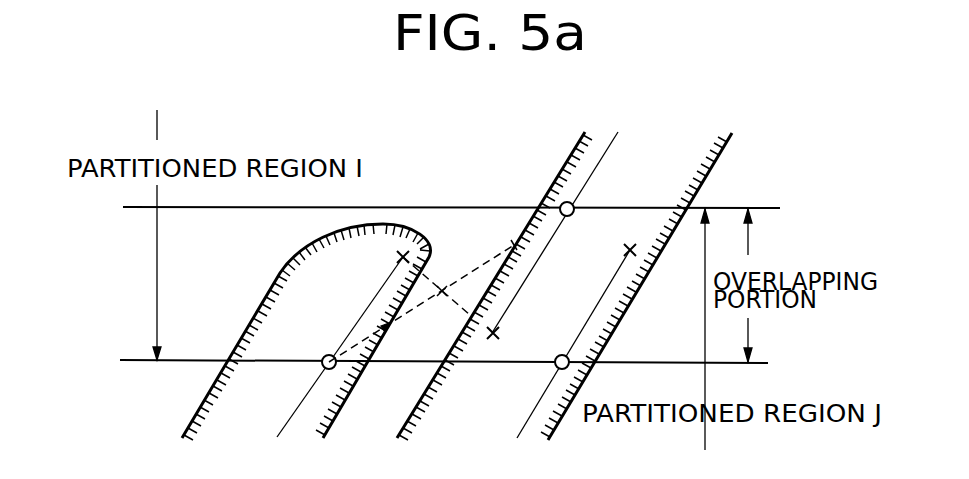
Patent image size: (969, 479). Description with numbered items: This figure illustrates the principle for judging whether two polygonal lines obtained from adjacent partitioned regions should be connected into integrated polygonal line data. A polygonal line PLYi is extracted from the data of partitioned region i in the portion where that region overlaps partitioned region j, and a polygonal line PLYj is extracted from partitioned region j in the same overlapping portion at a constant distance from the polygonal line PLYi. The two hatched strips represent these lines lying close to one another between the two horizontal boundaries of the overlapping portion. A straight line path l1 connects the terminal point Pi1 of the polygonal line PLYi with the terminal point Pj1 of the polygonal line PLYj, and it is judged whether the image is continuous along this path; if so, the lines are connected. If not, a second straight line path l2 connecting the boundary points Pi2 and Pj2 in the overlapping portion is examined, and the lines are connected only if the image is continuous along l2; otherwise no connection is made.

The polygonal line PLYi is at (600, 161).
The polygonal line PLYj is at (298, 407).
The terminal point Pi1 is at (500, 334).
The boundary point Pi2 is at (575, 204).
The terminal point Pj1 is at (398, 258).
The boundary point Pj2 is at (329, 354).
The straight line path l1 is at (453, 303).
The straight line path l2 is at (470, 273).